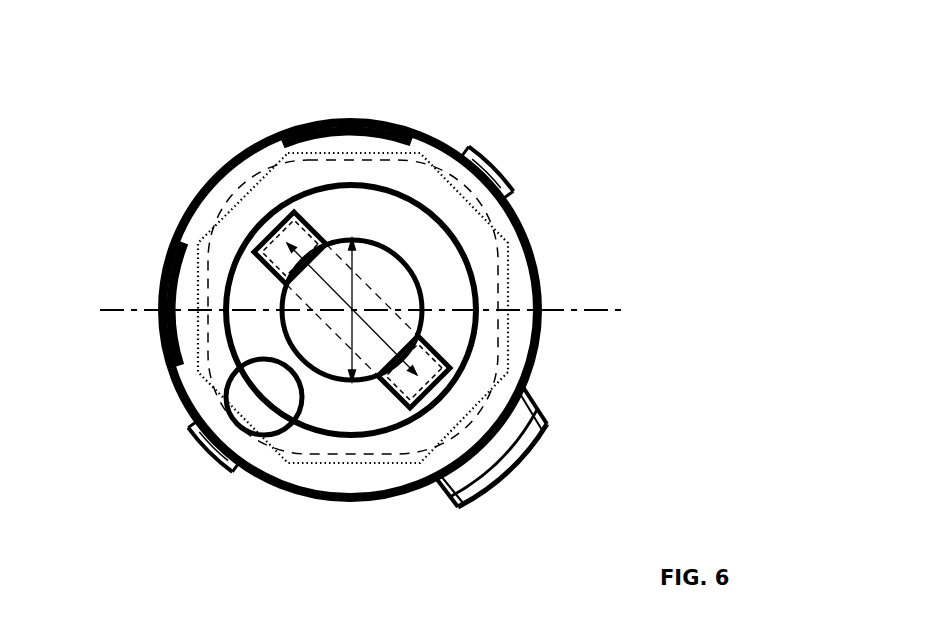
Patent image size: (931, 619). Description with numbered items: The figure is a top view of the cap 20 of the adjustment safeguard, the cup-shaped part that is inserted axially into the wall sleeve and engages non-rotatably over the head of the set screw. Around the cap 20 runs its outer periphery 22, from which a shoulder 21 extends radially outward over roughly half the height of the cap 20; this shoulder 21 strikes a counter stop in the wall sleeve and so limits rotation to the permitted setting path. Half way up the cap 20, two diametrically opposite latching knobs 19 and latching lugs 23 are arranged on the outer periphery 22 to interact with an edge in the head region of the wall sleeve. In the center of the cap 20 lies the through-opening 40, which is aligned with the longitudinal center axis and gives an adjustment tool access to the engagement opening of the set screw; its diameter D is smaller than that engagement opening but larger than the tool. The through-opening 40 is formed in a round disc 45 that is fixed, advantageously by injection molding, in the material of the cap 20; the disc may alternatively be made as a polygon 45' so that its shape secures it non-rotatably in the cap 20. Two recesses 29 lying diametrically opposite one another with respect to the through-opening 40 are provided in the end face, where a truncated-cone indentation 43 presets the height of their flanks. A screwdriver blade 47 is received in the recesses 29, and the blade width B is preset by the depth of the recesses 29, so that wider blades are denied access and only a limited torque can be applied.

The cap 20 is at (154, 154).
The shoulder 21 is at (523, 427).
The outer periphery 22 is at (166, 362).
The latching lugs 23 is at (493, 163).
The recesses 29 is at (278, 216).
The through-opening 40 is at (432, 300).
The indentation 43 is at (340, 210).
The disc 45 is at (419, 307).
The polygon 45' is at (407, 306).
The blade 47 is at (270, 237).
The latching knobs 19 is at (222, 443).
The diameter of the through-opening D is at (355, 268).
The width of the screwdriver blade B is at (386, 362).